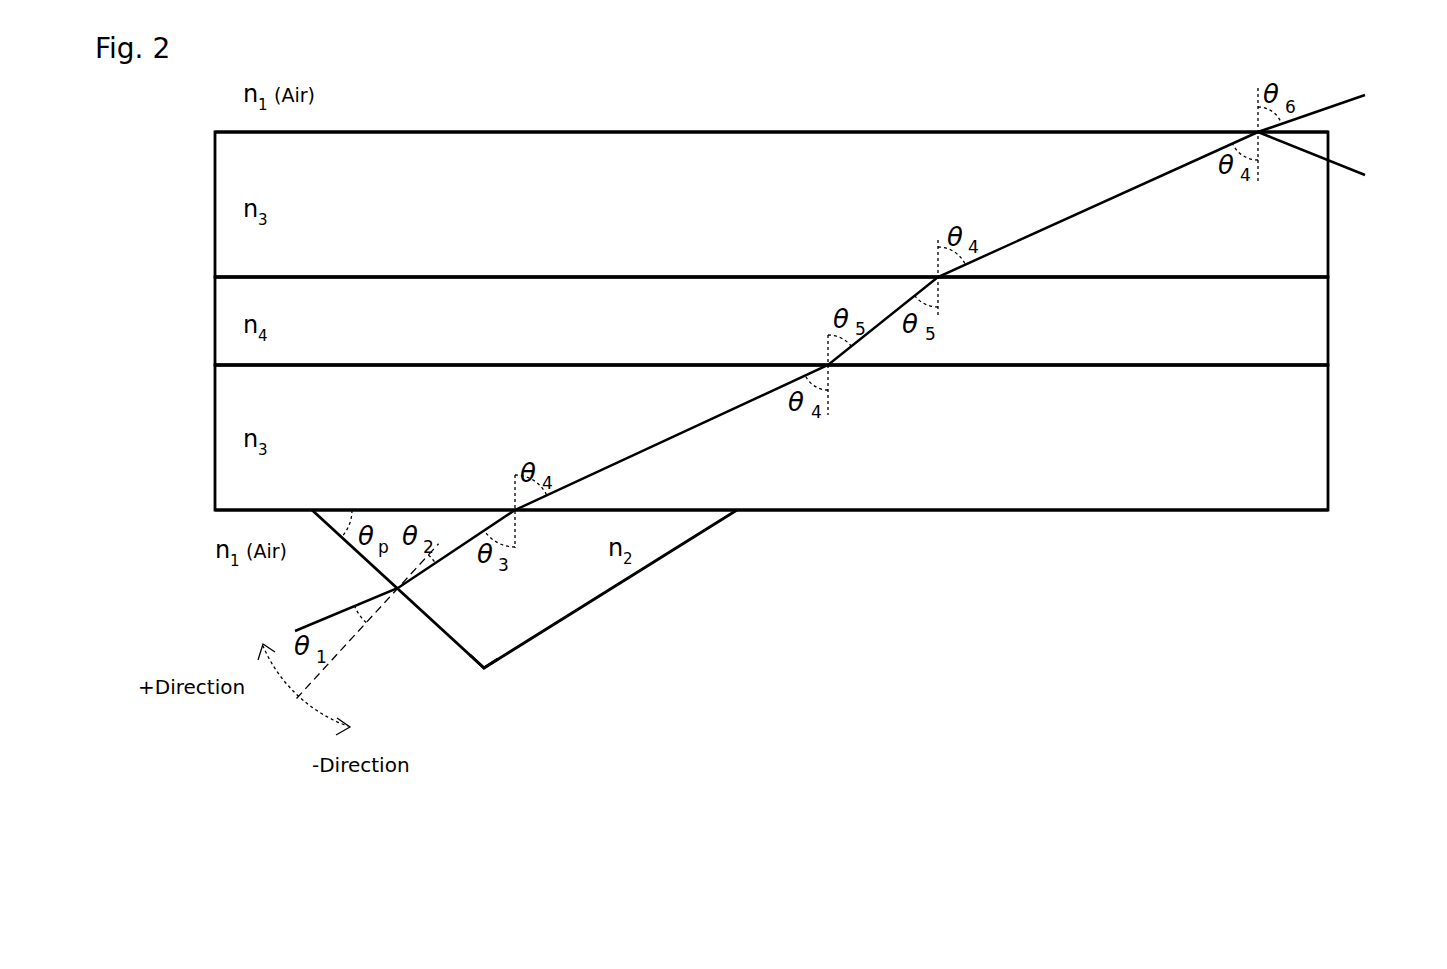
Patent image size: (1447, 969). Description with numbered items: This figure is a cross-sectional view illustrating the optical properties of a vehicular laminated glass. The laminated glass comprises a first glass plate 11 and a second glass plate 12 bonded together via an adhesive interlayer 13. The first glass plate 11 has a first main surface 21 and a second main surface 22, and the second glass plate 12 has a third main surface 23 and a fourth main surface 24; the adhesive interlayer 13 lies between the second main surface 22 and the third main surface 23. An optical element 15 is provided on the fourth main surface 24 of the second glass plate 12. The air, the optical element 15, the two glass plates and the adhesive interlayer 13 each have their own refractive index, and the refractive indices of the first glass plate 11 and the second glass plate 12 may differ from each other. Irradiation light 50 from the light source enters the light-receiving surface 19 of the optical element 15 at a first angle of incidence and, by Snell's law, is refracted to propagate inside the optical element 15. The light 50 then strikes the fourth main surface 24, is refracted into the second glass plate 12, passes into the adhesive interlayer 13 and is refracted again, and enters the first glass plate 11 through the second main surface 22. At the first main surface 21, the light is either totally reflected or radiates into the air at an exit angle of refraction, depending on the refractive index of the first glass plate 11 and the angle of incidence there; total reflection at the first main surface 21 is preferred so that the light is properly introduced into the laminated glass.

The first glass plate 11 is at (215, 207).
The second glass plate 12 is at (215, 437).
The adhesive interlayer 13 is at (215, 322).
The optical element 15 is at (570, 600).
The light-receiving surface 19 is at (467, 657).
The first main surface 21 is at (1307, 132).
The second main surface 22 is at (1293, 277).
The third main surface 23 is at (1293, 365).
The fourth main surface 24 is at (1293, 510).
The irradiation light 50 is at (323, 617).